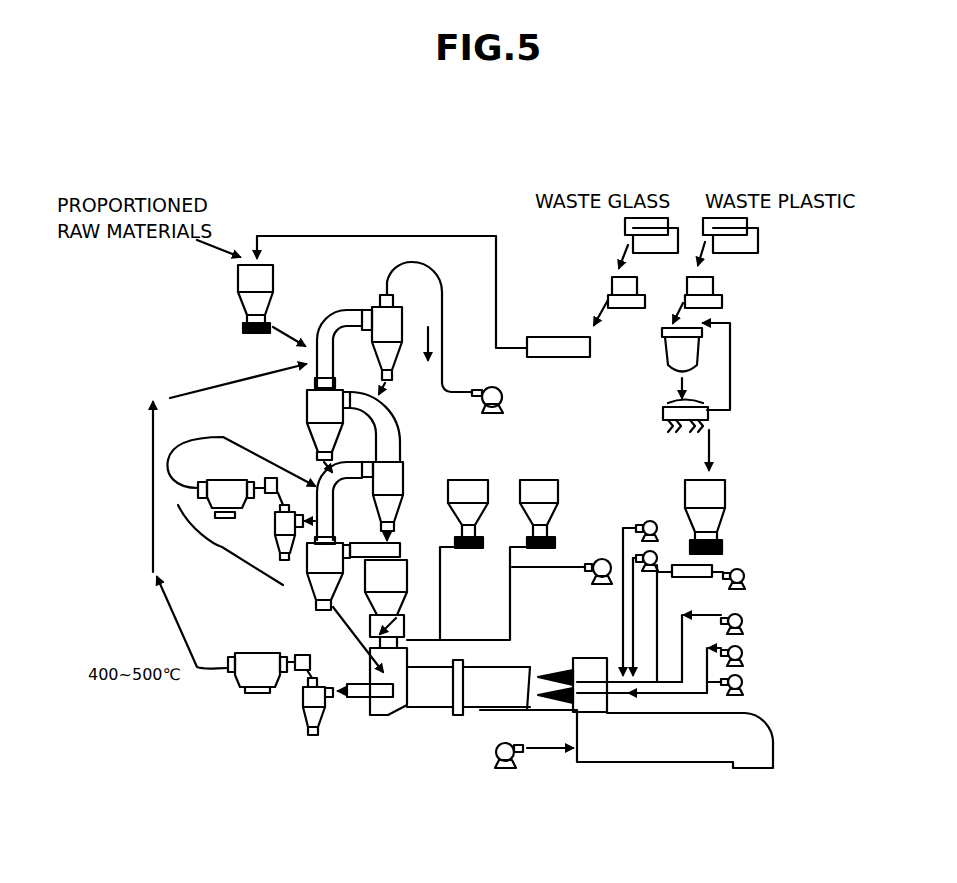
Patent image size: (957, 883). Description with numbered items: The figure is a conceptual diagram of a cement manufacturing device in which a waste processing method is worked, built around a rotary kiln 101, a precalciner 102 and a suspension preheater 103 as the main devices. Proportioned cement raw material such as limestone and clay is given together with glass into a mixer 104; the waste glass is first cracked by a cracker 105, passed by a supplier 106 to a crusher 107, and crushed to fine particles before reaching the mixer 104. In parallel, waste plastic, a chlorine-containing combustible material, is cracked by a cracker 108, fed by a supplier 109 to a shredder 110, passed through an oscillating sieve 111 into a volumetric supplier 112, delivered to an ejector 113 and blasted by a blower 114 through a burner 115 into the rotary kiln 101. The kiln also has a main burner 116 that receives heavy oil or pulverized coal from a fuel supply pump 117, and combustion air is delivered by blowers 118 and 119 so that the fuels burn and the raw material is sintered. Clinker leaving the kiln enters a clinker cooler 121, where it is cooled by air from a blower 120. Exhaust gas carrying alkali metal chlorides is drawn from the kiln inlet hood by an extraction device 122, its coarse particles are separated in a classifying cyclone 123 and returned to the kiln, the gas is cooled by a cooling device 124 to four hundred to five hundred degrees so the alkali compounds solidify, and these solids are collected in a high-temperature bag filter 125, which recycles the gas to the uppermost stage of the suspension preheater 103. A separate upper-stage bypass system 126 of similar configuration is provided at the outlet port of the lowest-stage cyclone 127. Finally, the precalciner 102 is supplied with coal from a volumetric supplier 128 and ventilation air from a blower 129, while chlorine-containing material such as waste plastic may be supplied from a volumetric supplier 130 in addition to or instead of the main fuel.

The rotary kiln 101 is at (507, 677).
The precalciner 102 is at (395, 604).
The suspension preheater 103 is at (417, 440).
The mixer 104 is at (272, 278).
The cracker 105 is at (627, 233).
The supplier 106 is at (610, 290).
The crusher 107 is at (565, 357).
The cracker 108 is at (758, 243).
The supplier 109 is at (712, 285).
The shredder 110 is at (687, 358).
The oscillating sieve 111 is at (710, 413).
The volumetric supplier 112 is at (715, 515).
The ejector 113 is at (683, 577).
The blower 114 is at (745, 573).
The burner 115 is at (592, 658).
The main burner 116 is at (612, 694).
The fuel supply pump 117 is at (742, 678).
The blower 118 is at (657, 558).
The blower 119 is at (747, 650).
The blower 120 is at (507, 770).
The clinker cooler 121 is at (640, 753).
The extraction device 122 is at (370, 697).
The classifying cyclone 123 is at (303, 720).
The cooling device 124 is at (302, 672).
The high-temperature bag filter 125 is at (245, 675).
The upper-stage bypass system 126 is at (241, 511).
The lowest-stage cyclone 127 is at (322, 588).
The volumetric supplier 128 is at (543, 490).
The blower 129 is at (583, 562).
The volumetric supplier 130 is at (468, 490).